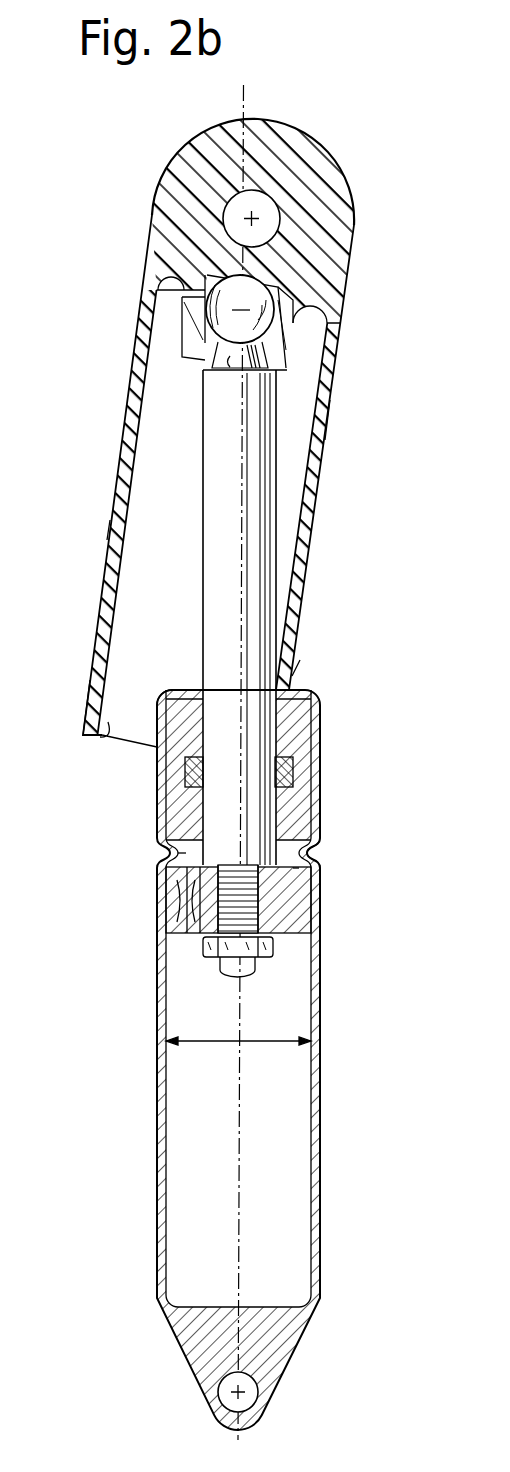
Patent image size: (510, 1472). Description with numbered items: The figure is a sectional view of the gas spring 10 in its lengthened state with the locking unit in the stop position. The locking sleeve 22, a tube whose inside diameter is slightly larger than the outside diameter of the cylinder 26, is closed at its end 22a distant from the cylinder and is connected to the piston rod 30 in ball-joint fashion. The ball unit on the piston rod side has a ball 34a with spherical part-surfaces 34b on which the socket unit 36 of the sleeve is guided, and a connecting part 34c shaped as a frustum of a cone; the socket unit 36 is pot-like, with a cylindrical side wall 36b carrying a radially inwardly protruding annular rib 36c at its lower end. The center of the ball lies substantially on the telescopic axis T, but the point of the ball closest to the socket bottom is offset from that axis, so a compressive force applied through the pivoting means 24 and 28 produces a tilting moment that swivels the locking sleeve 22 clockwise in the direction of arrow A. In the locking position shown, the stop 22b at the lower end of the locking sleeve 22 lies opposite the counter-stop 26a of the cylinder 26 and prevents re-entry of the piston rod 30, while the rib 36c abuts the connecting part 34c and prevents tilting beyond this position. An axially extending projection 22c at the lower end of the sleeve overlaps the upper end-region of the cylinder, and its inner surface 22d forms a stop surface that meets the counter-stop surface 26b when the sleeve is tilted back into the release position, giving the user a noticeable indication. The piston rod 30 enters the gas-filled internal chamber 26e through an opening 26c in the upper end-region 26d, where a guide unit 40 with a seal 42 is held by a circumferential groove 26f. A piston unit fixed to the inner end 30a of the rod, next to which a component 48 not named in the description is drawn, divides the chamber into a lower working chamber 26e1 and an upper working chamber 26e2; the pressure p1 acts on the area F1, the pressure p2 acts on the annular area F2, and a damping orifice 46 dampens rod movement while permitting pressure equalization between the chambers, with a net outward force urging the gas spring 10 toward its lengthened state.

The gas spring 10 is at (95, 540).
The locking sleeve 22 is at (131, 437).
The end of locking sleeve distant from the cylinder 22a is at (313, 242).
The stop 22b is at (300, 683).
The axially extending projection 22c is at (87, 716).
The inner surface of the projection 22d is at (103, 738).
The pivoting means 24 is at (254, 217).
The cylinder 26 is at (316, 1103).
The counter-stop 26a is at (189, 686).
The counter-stop surface 26b is at (156, 714).
The opening 26c is at (198, 689).
The upper end-region of the cylinder 26d is at (323, 763).
The internal chamber 26e is at (166, 1072).
The lower working chamber 26e1 is at (291, 1234).
The upper working chamber 26e2 is at (293, 838).
The circumferential groove 26f is at (301, 852).
The pivoting means 28 is at (259, 1389).
The piston rod 30 is at (263, 592).
The inner end of the piston rod 30a is at (250, 908).
The ball 34a is at (287, 329).
The spherical part-surfaces 34b is at (187, 296).
The connecting part 34c is at (231, 369).
The socket unit 36 is at (293, 290).
The cylindrical side wall 36b is at (194, 325).
The annular rib 36c is at (281, 361).
The guide unit 40 is at (294, 729).
The seal 42 is at (173, 804).
The damping orifice 46 is at (184, 899).
The nut 48 is at (200, 934).
The arrow A is at (330, 509).
The telescopic axis T is at (234, 586).
The area F1 is at (250, 1042).
The annular area F2 is at (183, 846).
The pressure in the lower working chamber p1 is at (201, 1177).
The pressure in the upper working chamber p2 is at (293, 868).